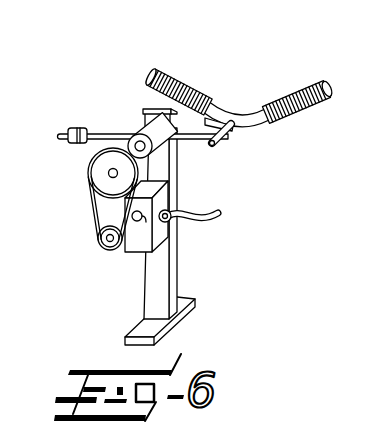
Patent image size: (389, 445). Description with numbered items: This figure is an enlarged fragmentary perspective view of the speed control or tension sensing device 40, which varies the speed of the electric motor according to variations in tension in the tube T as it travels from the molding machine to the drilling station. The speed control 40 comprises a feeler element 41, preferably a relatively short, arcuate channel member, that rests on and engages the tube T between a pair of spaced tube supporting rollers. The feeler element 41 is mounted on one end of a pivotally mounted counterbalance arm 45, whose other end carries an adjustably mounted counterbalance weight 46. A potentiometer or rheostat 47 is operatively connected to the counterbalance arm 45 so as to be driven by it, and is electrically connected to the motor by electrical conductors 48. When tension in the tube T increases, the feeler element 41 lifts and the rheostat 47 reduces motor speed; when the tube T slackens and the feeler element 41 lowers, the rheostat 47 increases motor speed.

The speed control or tension sensing device 40 is at (266, 77).
The feeler element 41 is at (245, 112).
The counterbalance arm 45 is at (107, 134).
The counterbalance weight 46 is at (74, 146).
The potentiometer or rheostat 47 is at (163, 233).
The electrical conductors 48 is at (231, 204).
The tube T is at (324, 110).